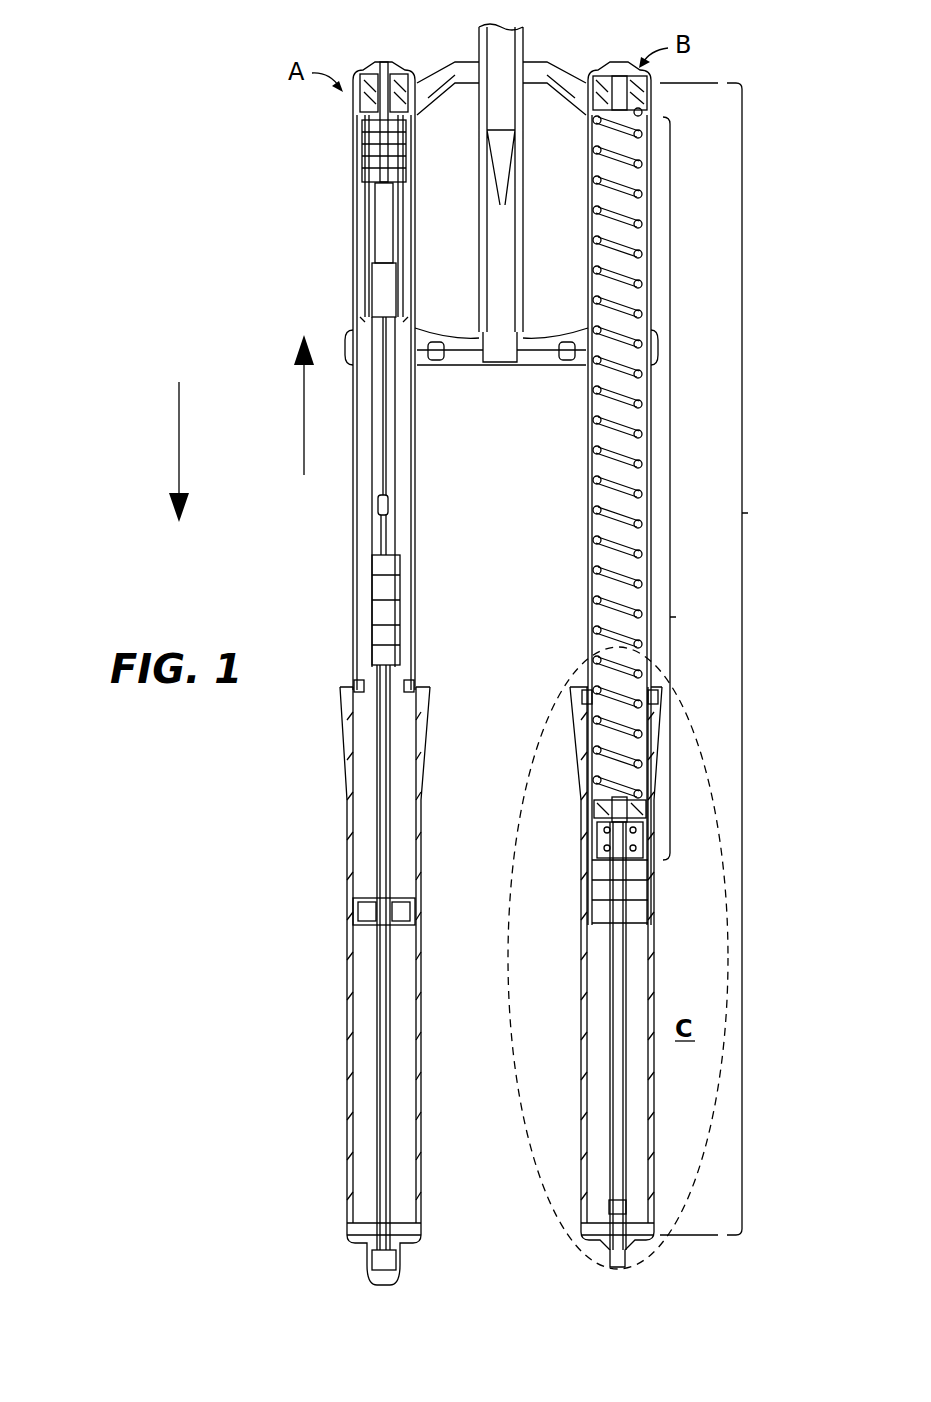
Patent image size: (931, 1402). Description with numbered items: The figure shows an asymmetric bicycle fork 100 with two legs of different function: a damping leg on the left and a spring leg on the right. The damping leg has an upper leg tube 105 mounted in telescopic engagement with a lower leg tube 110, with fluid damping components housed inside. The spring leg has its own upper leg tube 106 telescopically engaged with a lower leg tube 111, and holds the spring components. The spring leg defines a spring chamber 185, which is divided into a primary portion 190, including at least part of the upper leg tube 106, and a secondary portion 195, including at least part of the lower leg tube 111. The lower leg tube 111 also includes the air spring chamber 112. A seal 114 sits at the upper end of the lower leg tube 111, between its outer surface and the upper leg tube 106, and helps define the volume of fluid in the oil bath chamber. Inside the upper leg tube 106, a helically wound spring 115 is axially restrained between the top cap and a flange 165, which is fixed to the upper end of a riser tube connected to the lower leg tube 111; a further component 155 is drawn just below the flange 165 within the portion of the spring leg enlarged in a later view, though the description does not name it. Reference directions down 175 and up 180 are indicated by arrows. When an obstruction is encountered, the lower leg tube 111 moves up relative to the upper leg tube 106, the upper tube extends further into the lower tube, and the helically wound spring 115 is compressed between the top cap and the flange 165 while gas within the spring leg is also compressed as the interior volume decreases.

The asymmetric bicycle fork 100 is at (278, 50).
The upper leg tube 105 is at (353, 553).
The upper leg tube 106 is at (588, 480).
The lower leg tube 110 is at (348, 1010).
The lower leg tube 111 is at (583, 1010).
The air spring chamber 112 is at (597, 1067).
The seal 114 is at (655, 688).
The helically wound spring 115 is at (600, 520).
The spring seat 155 is at (595, 855).
The flange 165 is at (597, 812).
The down reference direction 175 is at (182, 475).
The up reference direction 180 is at (304, 385).
The spring chamber 185 is at (732, 659).
The primary portion 190 is at (695, 488).
The secondary portion 195 is at (580, 863).